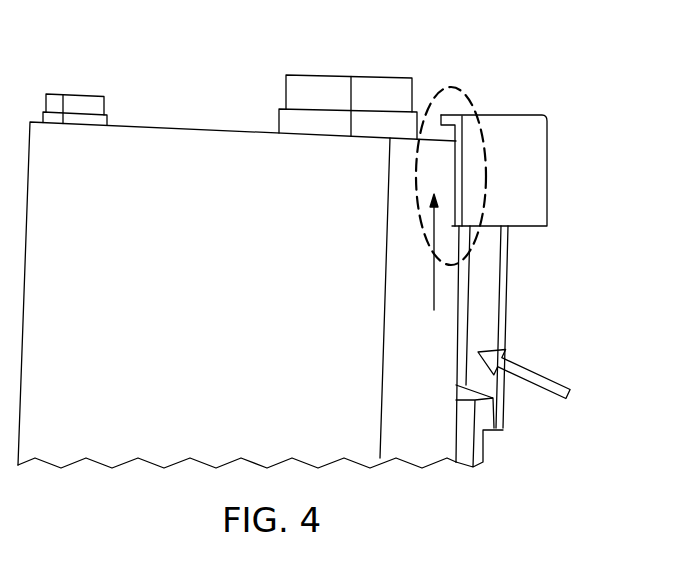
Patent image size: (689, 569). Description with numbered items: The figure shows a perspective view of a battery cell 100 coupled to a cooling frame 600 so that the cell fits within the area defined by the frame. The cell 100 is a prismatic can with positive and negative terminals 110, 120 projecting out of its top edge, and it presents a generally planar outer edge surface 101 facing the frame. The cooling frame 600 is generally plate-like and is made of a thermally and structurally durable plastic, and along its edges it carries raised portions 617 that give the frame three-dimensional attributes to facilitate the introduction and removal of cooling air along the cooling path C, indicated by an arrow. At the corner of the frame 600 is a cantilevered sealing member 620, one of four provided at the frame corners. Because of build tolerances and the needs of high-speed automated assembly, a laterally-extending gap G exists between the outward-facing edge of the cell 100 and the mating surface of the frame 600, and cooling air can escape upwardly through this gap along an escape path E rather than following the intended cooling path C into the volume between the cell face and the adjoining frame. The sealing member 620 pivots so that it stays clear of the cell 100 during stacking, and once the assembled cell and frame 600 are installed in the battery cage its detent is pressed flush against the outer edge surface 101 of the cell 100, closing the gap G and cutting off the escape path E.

The battery cell 100 is at (178, 428).
The outer edge surface 101 is at (433, 428).
The positive terminal 110 is at (340, 75).
The negative terminal 120 is at (79, 94).
The cooling frame 600 is at (478, 448).
The raised portions 617 is at (515, 230).
The cantilevered sealing member 620 is at (545, 197).
The gap G is at (478, 112).
The escape path E is at (432, 280).
The cooling path C is at (558, 380).